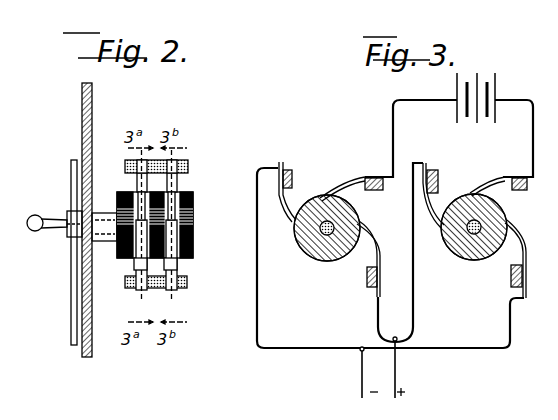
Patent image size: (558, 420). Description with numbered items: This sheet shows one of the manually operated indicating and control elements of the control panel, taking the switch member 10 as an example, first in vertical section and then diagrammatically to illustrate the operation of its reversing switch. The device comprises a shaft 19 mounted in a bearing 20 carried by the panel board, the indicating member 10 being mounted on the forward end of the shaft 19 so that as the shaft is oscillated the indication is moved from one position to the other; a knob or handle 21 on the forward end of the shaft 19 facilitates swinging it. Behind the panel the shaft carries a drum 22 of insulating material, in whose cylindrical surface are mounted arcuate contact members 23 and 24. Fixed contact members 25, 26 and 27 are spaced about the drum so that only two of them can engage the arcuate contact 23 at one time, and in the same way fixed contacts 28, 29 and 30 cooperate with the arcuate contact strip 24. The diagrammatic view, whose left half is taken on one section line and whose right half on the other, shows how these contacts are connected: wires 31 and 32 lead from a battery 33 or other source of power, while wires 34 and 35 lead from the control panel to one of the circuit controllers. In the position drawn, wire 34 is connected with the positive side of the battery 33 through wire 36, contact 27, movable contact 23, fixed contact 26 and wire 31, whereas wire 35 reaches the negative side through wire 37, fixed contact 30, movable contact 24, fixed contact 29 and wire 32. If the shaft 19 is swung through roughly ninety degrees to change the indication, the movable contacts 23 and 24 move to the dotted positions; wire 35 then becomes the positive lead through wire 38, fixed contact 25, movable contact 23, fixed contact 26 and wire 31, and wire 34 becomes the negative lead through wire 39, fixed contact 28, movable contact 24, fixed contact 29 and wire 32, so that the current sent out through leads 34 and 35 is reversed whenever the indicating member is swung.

In FIG. 2, the switch member 10 is at (80, 290).
In FIG. 2, the shaft 19 is at (70, 248).
In FIG. 3, the shaft 19 is at (326, 258).
In FIG. 2, the bearing 20 is at (104, 244).
In FIG. 2, the knob or handle 21 is at (36, 232).
In FIG. 2, the drum 22 is at (194, 237).
In FIG. 3, the drum 22 is at (333, 262).
In FIG. 3, the arcuate contact member 23 is at (360, 216).
In FIG. 2, the arcuate contact strip 24 is at (180, 190).
In FIG. 3, the arcuate contact strip 24 is at (506, 216).
In FIG. 3, the fixed contact member 25 is at (288, 216).
In FIG. 2, the fixed contact member 26 is at (127, 163).
In FIG. 3, the fixed contact member 26 is at (350, 180).
In FIG. 2, the fixed contact member 27 is at (136, 184).
In FIG. 3, the fixed contact member 27 is at (381, 248).
In FIG. 3, the fixed contact 28 is at (430, 232).
In FIG. 2, the fixed contact 29 is at (178, 176).
In FIG. 3, the fixed contact 29 is at (494, 181).
In FIG. 2, the fixed contact 30 is at (180, 268).
In FIG. 3, the fixed contact 30 is at (524, 262).
In FIG. 3, the wire 31 is at (392, 130).
In FIG. 3, the wire 32 is at (532, 140).
In FIG. 3, the battery 33 is at (460, 103).
In FIG. 3, the wire 34 is at (397, 377).
In FIG. 3, the wire 35 is at (361, 375).
In FIG. 3, the wire 36 is at (377, 310).
In FIG. 3, the wire 37 is at (488, 347).
In FIG. 3, the wire 38 is at (270, 347).
In FIG. 3, the wire 39 is at (414, 330).